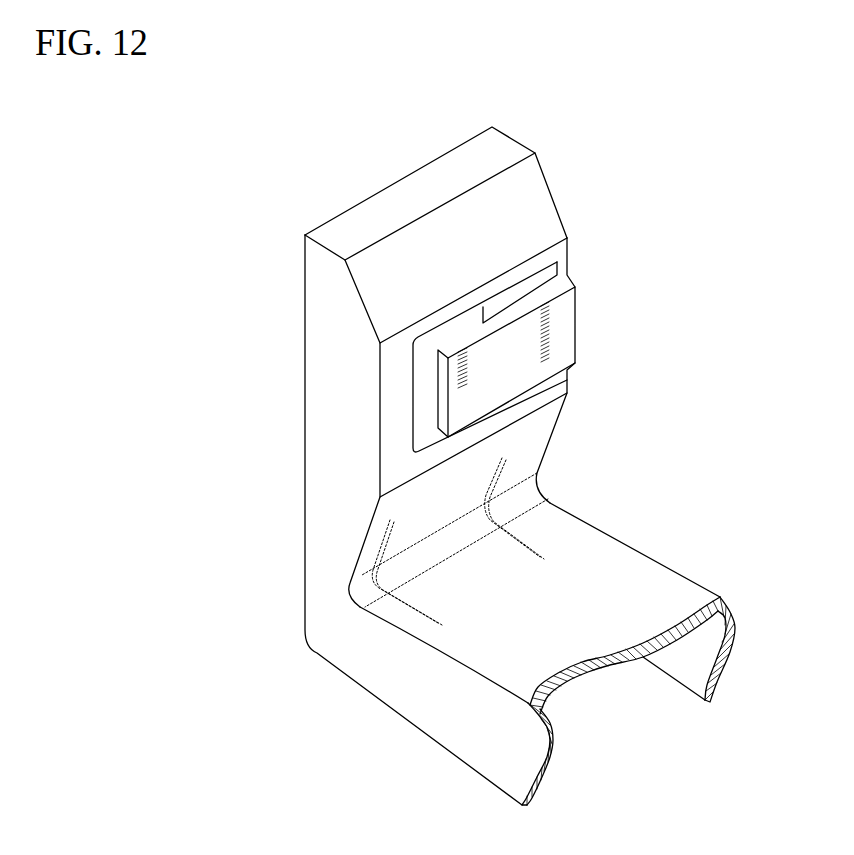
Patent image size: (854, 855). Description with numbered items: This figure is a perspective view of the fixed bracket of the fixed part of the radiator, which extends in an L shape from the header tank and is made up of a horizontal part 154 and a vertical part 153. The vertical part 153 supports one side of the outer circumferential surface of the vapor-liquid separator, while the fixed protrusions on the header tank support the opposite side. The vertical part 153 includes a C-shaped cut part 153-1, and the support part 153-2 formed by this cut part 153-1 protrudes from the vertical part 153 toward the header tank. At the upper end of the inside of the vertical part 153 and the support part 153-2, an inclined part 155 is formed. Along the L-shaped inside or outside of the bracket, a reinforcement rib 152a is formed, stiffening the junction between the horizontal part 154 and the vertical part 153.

The reinforcement rib 152a is at (710, 703).
The vertical part 153 is at (395, 455).
The cut part 153-1 is at (423, 372).
The support part 153-2 is at (425, 429).
The horizontal part 154 is at (615, 560).
The inclined part 155 is at (562, 293).